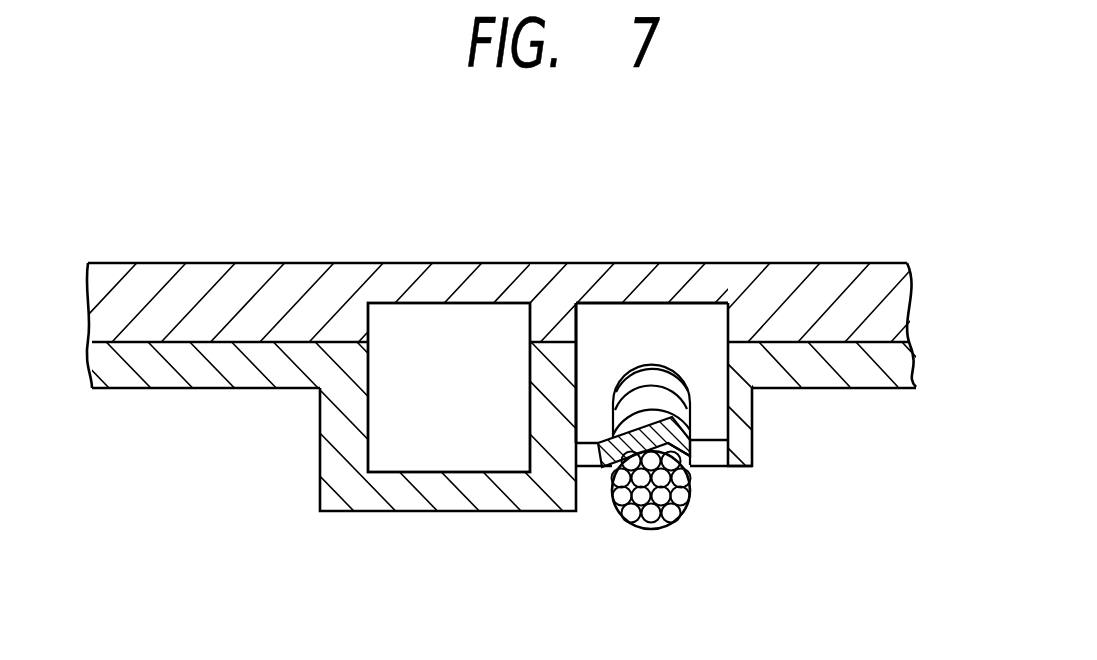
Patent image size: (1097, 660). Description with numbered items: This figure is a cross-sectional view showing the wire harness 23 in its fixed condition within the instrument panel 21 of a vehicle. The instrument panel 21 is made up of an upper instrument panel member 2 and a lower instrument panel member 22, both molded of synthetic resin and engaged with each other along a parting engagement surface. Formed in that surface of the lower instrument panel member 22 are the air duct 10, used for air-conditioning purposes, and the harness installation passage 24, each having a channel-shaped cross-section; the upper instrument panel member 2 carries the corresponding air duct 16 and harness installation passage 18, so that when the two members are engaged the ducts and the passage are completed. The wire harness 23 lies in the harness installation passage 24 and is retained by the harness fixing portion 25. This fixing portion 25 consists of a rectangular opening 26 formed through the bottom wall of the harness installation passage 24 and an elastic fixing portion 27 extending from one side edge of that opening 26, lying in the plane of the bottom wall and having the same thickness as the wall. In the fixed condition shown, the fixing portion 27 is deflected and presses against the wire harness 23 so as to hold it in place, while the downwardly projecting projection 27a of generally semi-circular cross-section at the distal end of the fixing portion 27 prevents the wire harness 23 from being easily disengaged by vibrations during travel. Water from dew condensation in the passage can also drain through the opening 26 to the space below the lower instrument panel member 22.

The upper instrument panel member 2 is at (835, 262).
The air duct 10 is at (464, 472).
The air duct 16 is at (453, 303).
The harness installation passage 18 is at (694, 303).
The instrument panel 21 is at (758, 232).
The lower instrument panel member 22 is at (849, 388).
The wire harness 23 is at (658, 530).
The harness installation passage 24 is at (577, 367).
The harness fixing portion 25 is at (597, 420).
The opening 26 is at (708, 452).
The fixing portion 27 is at (596, 453).
The projection 27a is at (693, 467).